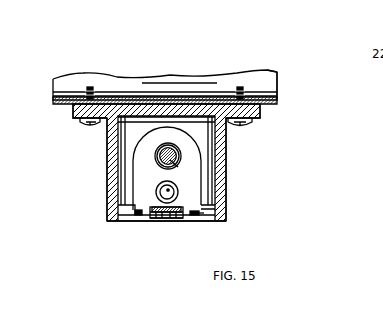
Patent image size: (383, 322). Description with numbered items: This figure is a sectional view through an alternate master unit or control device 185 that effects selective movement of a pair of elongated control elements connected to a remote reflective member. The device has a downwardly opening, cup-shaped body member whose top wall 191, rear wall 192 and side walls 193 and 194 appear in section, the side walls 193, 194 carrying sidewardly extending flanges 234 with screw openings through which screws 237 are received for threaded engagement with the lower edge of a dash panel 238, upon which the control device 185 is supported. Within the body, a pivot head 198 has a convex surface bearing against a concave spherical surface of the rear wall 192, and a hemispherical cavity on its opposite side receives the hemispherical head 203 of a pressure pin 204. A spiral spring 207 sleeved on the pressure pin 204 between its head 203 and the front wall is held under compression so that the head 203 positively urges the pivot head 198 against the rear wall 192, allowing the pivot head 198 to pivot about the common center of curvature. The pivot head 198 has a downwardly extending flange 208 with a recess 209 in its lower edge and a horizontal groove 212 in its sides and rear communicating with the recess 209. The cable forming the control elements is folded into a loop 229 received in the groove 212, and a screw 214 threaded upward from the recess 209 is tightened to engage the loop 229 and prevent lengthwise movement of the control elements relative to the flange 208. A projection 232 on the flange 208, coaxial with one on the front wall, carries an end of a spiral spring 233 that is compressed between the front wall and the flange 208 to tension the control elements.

The control device 185 is at (272, 157).
The top wall 191 is at (180, 108).
The rear wall 192 is at (133, 132).
The side wall 193 is at (225, 135).
The side wall 194 is at (112, 151).
The pivot head 198 is at (147, 165).
The hemispherical head 203 is at (183, 146).
The pressure pin 204 is at (177, 165).
The spiral spring 207 is at (178, 155).
The flange 208 is at (138, 214).
The recess 209 is at (160, 223).
The groove 212 is at (140, 223).
The screw 214 is at (170, 223).
The loop 229 is at (194, 226).
The projection 232 is at (166, 188).
The spiral spring 233 is at (222, 201).
The flange 234 is at (72, 108).
The screw 237 is at (241, 86).
The dash panel 238 is at (269, 78).